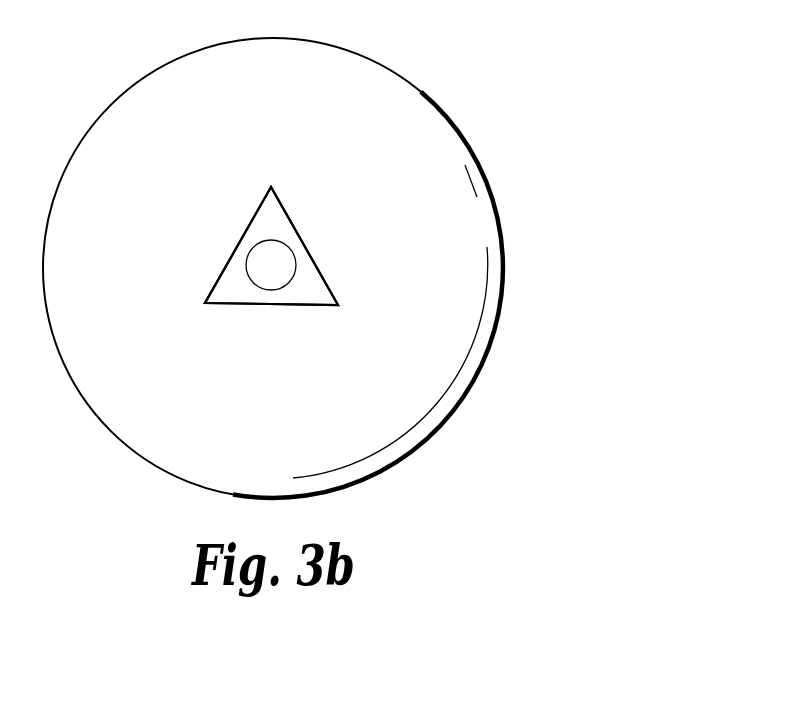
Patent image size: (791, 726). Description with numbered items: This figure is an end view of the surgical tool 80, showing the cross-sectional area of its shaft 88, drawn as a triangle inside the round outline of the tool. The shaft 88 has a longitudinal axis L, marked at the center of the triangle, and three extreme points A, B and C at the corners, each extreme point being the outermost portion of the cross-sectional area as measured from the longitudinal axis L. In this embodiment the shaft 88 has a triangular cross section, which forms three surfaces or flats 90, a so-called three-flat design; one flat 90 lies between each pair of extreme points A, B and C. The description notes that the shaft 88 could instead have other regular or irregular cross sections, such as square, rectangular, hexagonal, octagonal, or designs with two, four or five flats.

The surgical tool 80 is at (505, 102).
The shaft 88 is at (214, 287).
The flat 90 is at (236, 249).